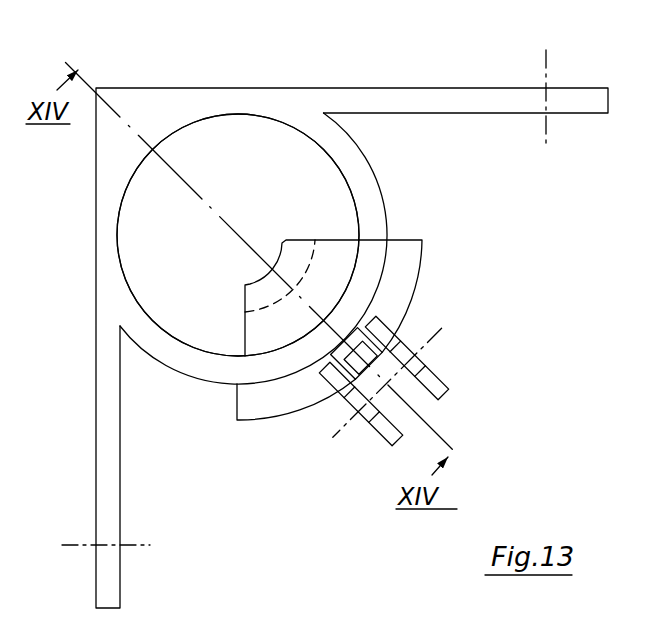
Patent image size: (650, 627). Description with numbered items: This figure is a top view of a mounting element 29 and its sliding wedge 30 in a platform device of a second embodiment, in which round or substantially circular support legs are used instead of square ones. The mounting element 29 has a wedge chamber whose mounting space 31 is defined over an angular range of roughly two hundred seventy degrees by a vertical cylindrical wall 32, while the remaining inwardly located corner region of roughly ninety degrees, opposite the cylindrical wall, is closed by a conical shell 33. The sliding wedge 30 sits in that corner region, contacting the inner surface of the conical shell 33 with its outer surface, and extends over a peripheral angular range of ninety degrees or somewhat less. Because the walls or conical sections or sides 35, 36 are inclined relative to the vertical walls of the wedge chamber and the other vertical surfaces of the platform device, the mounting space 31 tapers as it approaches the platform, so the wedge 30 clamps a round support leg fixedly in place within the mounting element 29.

The mounting element 29 is at (306, 86).
The sliding wedge 30 is at (257, 277).
The mounting space 31 is at (240, 148).
The vertical cylindrical wall 32 is at (180, 131).
The conical shell 33 is at (402, 285).
The conical section 35 is at (384, 258).
The conical section 36 is at (278, 356).